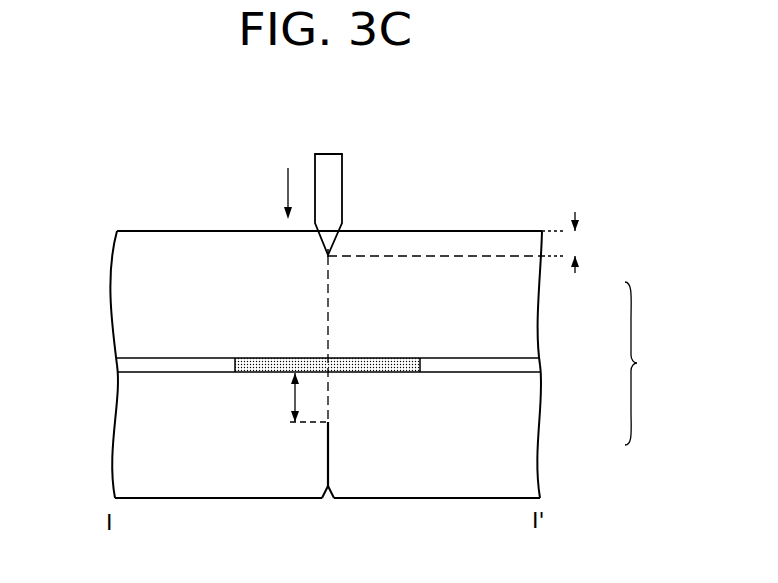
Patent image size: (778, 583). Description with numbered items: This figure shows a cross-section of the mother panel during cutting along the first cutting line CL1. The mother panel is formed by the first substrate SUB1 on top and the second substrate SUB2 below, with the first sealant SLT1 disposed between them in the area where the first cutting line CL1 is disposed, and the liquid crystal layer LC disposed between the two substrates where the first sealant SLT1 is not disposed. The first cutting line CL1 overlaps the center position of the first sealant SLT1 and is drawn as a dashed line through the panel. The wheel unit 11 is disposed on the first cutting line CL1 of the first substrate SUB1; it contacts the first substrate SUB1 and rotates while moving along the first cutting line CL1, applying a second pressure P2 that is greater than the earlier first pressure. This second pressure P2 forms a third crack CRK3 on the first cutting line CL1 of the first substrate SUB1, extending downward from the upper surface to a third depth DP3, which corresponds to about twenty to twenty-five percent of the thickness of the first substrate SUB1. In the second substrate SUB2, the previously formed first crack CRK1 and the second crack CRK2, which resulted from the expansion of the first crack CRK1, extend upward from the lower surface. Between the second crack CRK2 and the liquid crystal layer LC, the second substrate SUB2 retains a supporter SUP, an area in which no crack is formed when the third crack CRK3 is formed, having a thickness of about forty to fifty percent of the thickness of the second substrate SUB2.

The wheel unit 11 is at (330, 183).
The second pressure P2 is at (273, 193).
The third crack CRK3 is at (319, 236).
The first cutting line CL1 is at (327, 318).
The first sealant SLT1 is at (372, 361).
The first substrate SUB1 is at (528, 297).
The liquid crystal layer LC is at (128, 366).
The second substrate SUB2 is at (528, 428).
The third depth DP3 is at (580, 242).
The supporter SUP is at (292, 396).
The second crack CRK2 is at (327, 439).
The first crack CRK1 is at (323, 494).